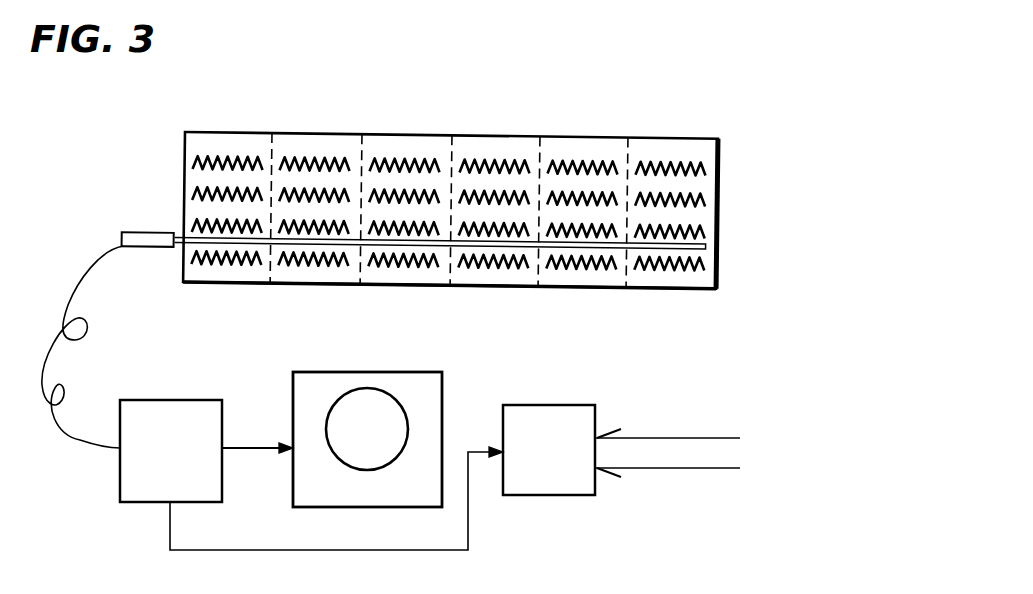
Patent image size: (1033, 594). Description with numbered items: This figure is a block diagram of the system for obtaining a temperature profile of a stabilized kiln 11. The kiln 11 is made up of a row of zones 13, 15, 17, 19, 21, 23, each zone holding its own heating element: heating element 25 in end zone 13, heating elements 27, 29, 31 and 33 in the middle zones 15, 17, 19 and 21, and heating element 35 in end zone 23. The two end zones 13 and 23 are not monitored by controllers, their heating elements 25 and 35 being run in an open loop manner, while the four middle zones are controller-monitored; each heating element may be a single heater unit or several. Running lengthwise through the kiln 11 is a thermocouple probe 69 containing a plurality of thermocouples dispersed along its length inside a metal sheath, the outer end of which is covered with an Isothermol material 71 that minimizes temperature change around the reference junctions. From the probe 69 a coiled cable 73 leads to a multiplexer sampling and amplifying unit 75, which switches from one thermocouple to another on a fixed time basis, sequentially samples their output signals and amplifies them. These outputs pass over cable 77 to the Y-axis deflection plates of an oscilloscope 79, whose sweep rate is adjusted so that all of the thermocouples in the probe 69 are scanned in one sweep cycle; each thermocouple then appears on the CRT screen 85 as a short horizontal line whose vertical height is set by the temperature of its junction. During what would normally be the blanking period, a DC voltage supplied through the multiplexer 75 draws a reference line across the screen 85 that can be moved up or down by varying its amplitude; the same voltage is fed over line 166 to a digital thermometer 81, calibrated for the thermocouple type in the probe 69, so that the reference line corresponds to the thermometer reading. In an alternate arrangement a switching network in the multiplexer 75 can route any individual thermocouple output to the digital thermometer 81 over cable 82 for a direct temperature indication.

The stabilized kiln 11 is at (683, 134).
The end zone 13 is at (664, 286).
The zone 15 is at (576, 284).
The zone 17 is at (490, 284).
The zone 19 is at (396, 284).
The zone 21 is at (306, 284).
The end zone 23 is at (222, 284).
The heating element 25 is at (698, 165).
The heating element 27 is at (598, 158).
The heating element 29 is at (492, 158).
The heating element 31 is at (397, 158).
The heating element 33 is at (327, 158).
The heating element 35 is at (228, 158).
The thermocouple probe 69 is at (708, 246).
The Isothermol material 71 is at (125, 232).
The cable 73 is at (66, 298).
The multiplexer sampling and amplifying unit 75 is at (118, 516).
The cable 77 is at (246, 446).
The oscilloscope 79 is at (314, 510).
The digital thermometer 81 is at (585, 497).
The cable 82 is at (666, 438).
The CRT screen 85 is at (429, 392).
The line 166 is at (468, 546).